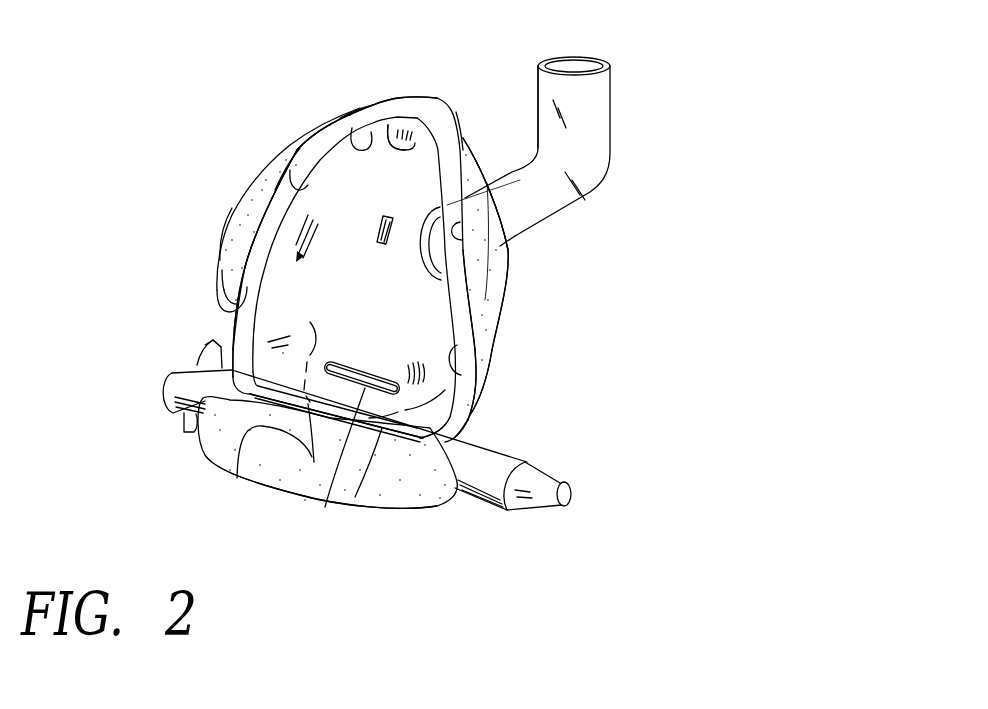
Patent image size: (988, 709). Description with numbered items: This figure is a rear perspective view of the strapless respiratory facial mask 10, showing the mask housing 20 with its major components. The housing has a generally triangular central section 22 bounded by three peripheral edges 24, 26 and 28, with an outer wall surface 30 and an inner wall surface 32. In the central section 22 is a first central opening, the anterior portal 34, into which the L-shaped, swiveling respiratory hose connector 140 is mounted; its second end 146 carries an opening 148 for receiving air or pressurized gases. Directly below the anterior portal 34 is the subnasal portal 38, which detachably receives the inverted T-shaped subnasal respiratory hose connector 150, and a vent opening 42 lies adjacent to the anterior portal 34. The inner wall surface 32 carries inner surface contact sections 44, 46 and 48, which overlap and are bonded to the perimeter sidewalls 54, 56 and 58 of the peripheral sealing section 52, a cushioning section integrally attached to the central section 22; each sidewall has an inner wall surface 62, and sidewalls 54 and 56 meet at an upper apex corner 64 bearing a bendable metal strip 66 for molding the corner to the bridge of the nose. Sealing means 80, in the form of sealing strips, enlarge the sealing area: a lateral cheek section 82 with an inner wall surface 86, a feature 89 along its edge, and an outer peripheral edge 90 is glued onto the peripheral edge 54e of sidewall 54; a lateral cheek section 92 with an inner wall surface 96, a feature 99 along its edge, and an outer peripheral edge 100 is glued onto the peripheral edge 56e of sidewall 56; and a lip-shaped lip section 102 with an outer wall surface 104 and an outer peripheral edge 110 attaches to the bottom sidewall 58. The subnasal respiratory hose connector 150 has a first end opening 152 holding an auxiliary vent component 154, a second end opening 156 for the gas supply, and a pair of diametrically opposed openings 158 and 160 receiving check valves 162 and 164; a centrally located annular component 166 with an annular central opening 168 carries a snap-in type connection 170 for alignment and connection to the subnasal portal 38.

The strapless respiratory facial mask 10 is at (107, 115).
The mask housing 20 is at (450, 88).
The central section 22 is at (320, 228).
The peripheral edge 24 is at (483, 340).
The peripheral edge 26 is at (310, 149).
The peripheral edge 28 is at (317, 448).
The outer wall surface 30 is at (477, 170).
The inner wall surface 32 is at (388, 125).
The anterior portal 34 is at (430, 255).
The subnasal portal 38 is at (317, 505).
The vent opening 42 is at (395, 208).
The inner surface contact section 44 is at (452, 323).
The inner surface contact section 46 is at (360, 145).
The inner surface contact section 48 is at (476, 401).
The peripheral sealing section 52 is at (340, 148).
The perimeter sidewall 54 is at (466, 310).
The peripheral edge of sidewall 54 54e is at (465, 328).
The perimeter sidewall 56 is at (255, 255).
The peripheral edge of sidewall 56 56e is at (222, 288).
The bottom sidewall 58 is at (368, 505).
The inner wall surface 62 is at (227, 232).
The upper apex corner 64 is at (413, 90).
The metal strip 66 is at (472, 142).
The sealing means 80 is at (463, 530).
The lateral cheek section 82 is at (516, 262).
The inner wall surface 86 is at (478, 195).
The bead 89 is at (492, 212).
The outer peripheral edge 90 is at (500, 233).
The lateral cheek section 92 is at (226, 210).
The inner wall surface 96 is at (257, 202).
The cushion outer wall 99 is at (293, 167).
The outer peripheral edge 100 is at (263, 178).
The lip section 102 is at (200, 450).
The outer wall surface 104 is at (234, 476).
The outer peripheral edge 110 is at (383, 512).
The respiratory hose connector 140 is at (590, 102).
The second end 146 is at (548, 94).
The opening 148 is at (573, 65).
The subnasal respiratory hose connector 150 is at (492, 443).
The first end opening 152 is at (520, 493).
The auxiliary vent component 154 is at (535, 478).
The second end opening 156 is at (160, 374).
The opening 158 is at (197, 360).
The opening 160 is at (167, 412).
The check valve 162 is at (210, 340).
The check valve 164 is at (183, 422).
The annular component 166 is at (297, 347).
The annular central opening 168 is at (358, 362).
The snap-in type connection 170 is at (478, 372).